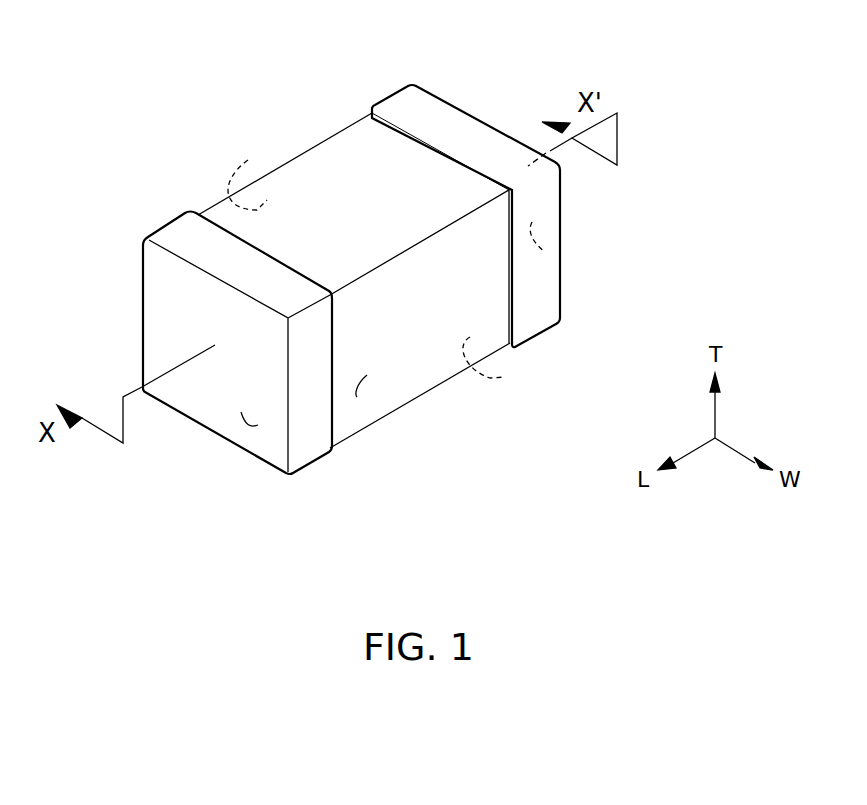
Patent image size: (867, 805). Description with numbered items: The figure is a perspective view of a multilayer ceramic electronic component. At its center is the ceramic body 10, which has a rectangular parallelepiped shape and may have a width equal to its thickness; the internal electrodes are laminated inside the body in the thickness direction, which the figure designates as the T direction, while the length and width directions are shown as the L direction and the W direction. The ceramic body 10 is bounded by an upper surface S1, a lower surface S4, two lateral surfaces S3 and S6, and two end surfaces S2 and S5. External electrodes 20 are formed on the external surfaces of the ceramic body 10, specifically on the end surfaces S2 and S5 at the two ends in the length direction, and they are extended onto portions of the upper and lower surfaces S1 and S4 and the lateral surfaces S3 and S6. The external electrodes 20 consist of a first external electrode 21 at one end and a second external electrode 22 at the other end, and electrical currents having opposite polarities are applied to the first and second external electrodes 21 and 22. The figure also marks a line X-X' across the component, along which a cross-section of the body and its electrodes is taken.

The ceramic body 10 is at (423, 368).
The external electrodes 20 is at (268, 43).
The first external electrode 21 is at (181, 226).
The second external electrode 22 is at (400, 102).
The upper surface S1 is at (393, 180).
The end surface S2 is at (243, 414).
The lateral surface S3 is at (362, 388).
The lower surface S4 is at (507, 376).
The end surface S5 is at (540, 234).
The lateral surface S6 is at (255, 158).